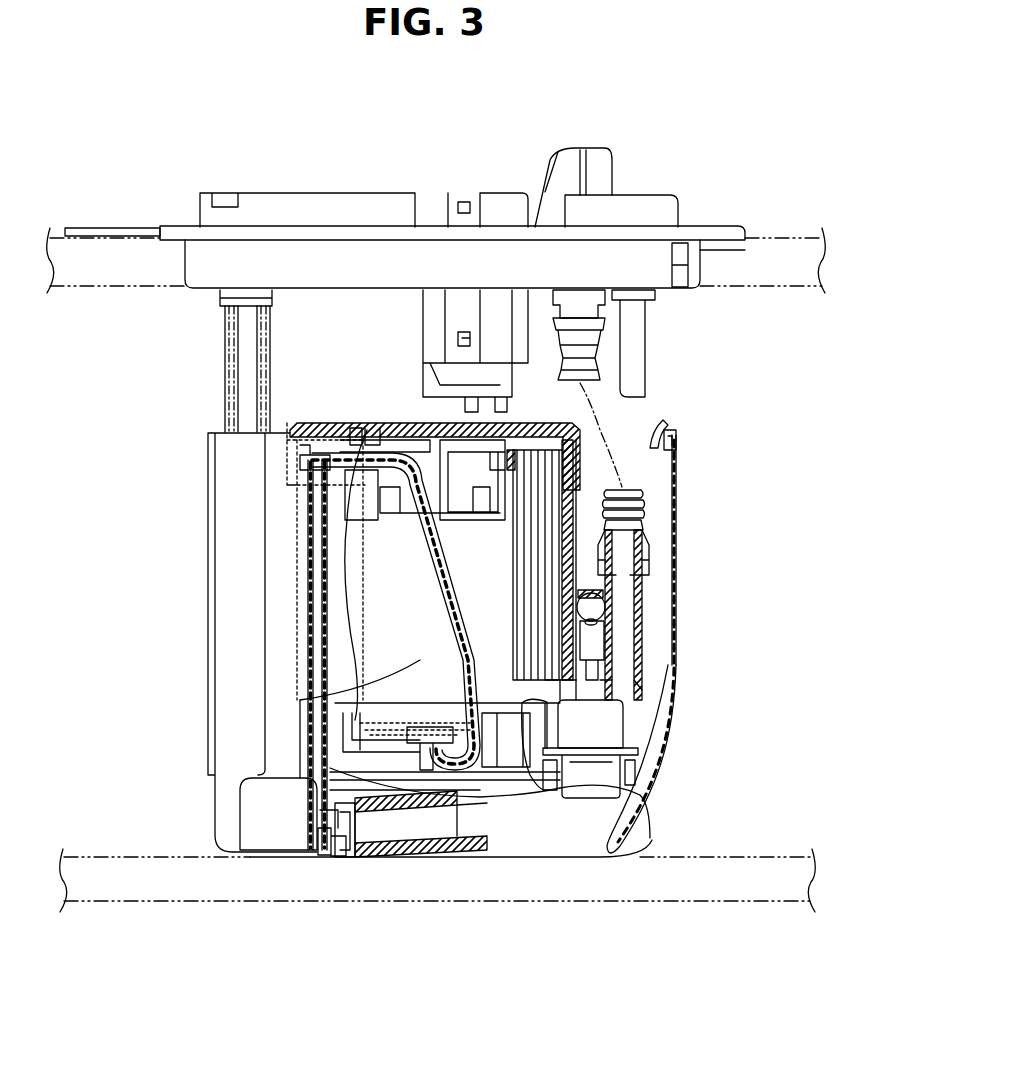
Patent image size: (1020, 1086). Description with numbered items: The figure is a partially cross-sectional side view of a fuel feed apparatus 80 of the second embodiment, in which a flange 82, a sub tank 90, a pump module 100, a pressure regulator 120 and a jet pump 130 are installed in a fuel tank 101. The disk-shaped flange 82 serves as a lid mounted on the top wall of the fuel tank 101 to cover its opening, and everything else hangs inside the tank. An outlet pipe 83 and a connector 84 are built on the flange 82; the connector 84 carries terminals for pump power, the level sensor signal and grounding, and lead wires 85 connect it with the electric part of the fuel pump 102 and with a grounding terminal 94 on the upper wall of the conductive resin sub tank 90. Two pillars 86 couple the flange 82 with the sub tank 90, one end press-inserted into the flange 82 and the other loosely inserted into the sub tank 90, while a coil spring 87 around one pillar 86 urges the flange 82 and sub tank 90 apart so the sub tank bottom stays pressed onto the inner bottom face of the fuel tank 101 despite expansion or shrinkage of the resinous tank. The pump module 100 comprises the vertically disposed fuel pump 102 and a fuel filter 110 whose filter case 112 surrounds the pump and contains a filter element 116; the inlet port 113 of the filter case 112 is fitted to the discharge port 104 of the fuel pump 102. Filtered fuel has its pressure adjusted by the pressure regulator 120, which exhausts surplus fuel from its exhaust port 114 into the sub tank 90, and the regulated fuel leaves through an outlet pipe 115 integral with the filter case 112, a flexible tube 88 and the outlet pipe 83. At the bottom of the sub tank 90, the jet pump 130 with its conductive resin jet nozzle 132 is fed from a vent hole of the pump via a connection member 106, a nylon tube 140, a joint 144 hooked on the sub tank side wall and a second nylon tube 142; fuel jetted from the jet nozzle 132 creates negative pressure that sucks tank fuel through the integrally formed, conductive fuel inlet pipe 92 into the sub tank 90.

The fuel feed apparatus 80 is at (652, 162).
The flange 82 is at (725, 230).
The outlet pipe 83 is at (560, 188).
The connector 84 is at (500, 190).
The lead wires 85 is at (424, 345).
The pillars 86 is at (258, 384).
The coil spring 87 is at (225, 345).
The flexible tube 88 is at (585, 392).
The sub tank 90 is at (677, 480).
The fuel inlet pipe 92 is at (410, 850).
The grounding terminal 94 is at (662, 452).
The pump module 100 is at (655, 695).
The fuel tank 101 is at (771, 292).
The fuel pump 102 is at (320, 595).
The discharge port 104 is at (447, 497).
The connection member 106 is at (427, 774).
The fuel filter 110 is at (642, 508).
The filter case 112 is at (567, 556).
The inlet port 113 is at (407, 470).
The exhaust port 114 is at (607, 626).
The outlet pipe 115 is at (641, 609).
The filter element 116 is at (604, 620).
The pressure regulator 120 is at (622, 795).
The jet pump 130 is at (306, 832).
The jet nozzle 132 is at (326, 822).
The nylon tube 140 is at (300, 699).
The nylon tube 142 is at (308, 666).
The joint 144 is at (300, 478).